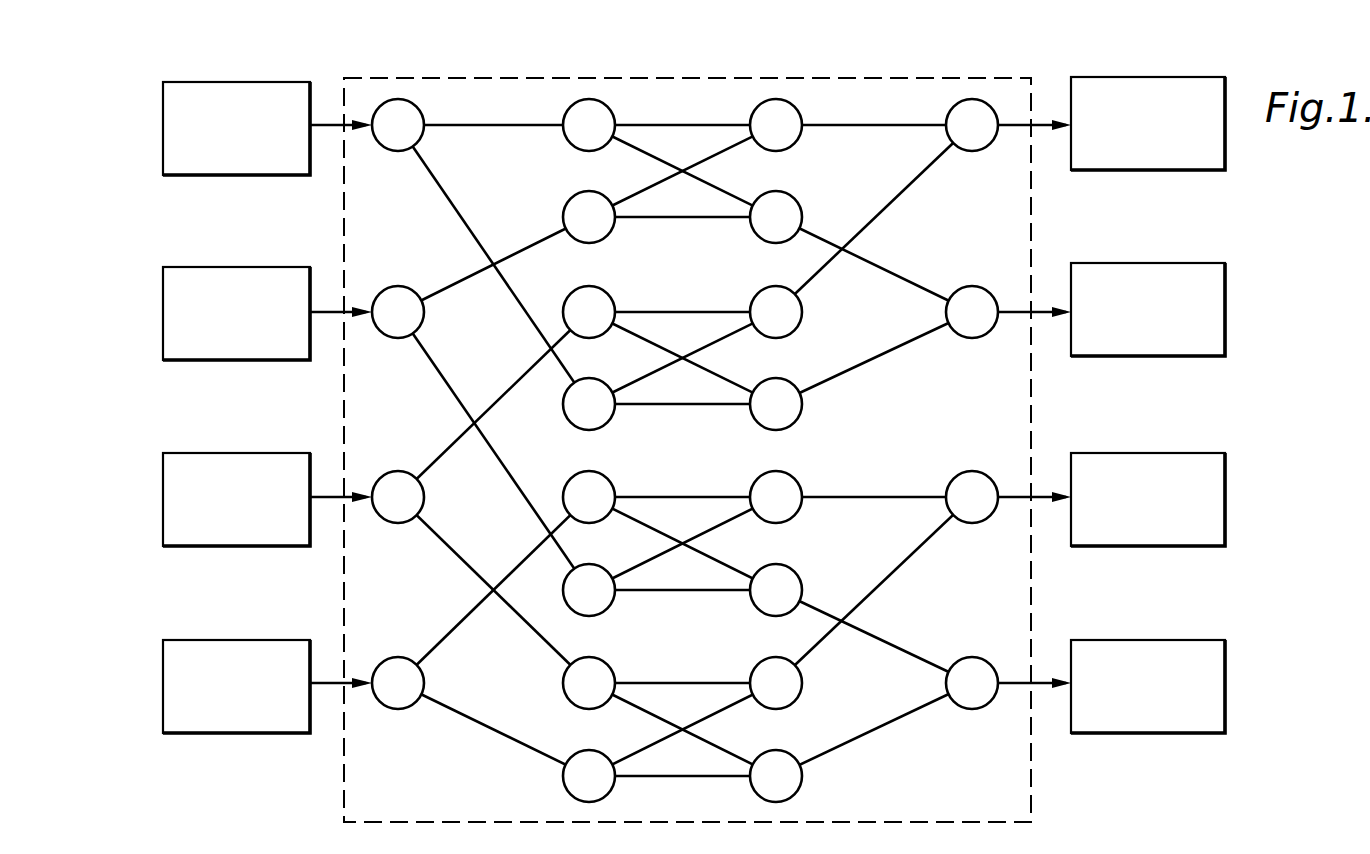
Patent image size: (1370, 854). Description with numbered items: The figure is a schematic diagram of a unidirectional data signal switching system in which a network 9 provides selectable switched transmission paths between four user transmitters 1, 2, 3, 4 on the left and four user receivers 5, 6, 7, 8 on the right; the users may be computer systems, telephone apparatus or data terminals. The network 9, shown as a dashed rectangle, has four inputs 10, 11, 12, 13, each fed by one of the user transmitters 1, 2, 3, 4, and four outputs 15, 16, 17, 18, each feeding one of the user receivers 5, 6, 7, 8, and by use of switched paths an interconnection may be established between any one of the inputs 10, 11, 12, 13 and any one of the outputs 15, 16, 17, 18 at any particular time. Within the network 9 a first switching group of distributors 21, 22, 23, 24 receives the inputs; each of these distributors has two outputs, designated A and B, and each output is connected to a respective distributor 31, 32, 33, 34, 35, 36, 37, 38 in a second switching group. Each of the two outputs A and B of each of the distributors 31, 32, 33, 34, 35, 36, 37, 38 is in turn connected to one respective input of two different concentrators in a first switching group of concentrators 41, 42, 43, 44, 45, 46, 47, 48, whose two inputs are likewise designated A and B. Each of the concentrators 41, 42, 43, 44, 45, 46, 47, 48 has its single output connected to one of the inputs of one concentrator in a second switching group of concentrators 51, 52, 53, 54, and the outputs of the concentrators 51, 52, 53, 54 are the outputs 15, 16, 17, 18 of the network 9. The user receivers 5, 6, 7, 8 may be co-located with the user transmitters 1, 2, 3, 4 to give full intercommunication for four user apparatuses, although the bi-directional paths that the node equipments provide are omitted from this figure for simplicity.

The user transmitter 1 is at (300, 82).
The user transmitter 2 is at (284, 267).
The user transmitter 3 is at (263, 453).
The user transmitter 4 is at (258, 640).
The user receiver 5 is at (1158, 171).
The user receiver 6 is at (1226, 340).
The user receiver 7 is at (1226, 520).
The user receiver 8 is at (1226, 685).
The network 9 is at (660, 78).
The input 10 is at (322, 124).
The input 11 is at (325, 311).
The input 12 is at (328, 496).
The input 13 is at (328, 682).
The output 15 is at (1047, 127).
The output 16 is at (1050, 315).
The output 17 is at (1057, 499).
The output 18 is at (1055, 686).
The distributor 21 is at (417, 104).
The distributor 22 is at (400, 287).
The distributor 23 is at (398, 472).
The distributor 24 is at (400, 658).
The distributor 31 is at (573, 147).
The distributor 32 is at (563, 220).
The distributor 33 is at (564, 304).
The distributor 34 is at (579, 382).
The distributor 35 is at (603, 478).
The distributor 36 is at (563, 589).
The distributor 37 is at (563, 682).
The distributor 38 is at (563, 779).
The concentrator 41 is at (802, 140).
The concentrator 42 is at (802, 208).
The concentrator 43 is at (781, 287).
The concentrator 44 is at (790, 380).
The concentrator 45 is at (802, 482).
The concentrator 46 is at (802, 580).
The concentrator 47 is at (801, 683).
The concentrator 48 is at (793, 758).
The concentrator 51 is at (978, 152).
The concentrator 52 is at (977, 334).
The concentrator 53 is at (970, 471).
The concentrator 54 is at (993, 627).